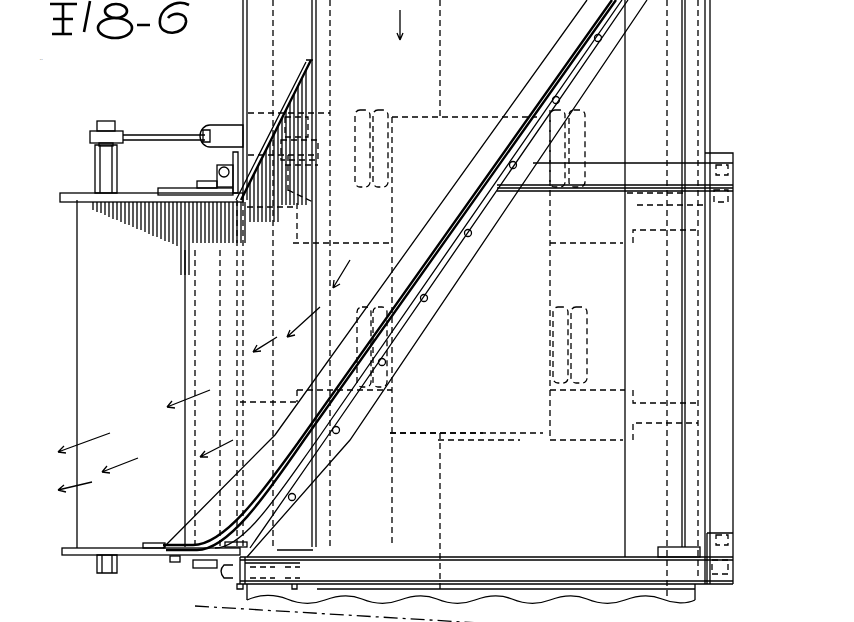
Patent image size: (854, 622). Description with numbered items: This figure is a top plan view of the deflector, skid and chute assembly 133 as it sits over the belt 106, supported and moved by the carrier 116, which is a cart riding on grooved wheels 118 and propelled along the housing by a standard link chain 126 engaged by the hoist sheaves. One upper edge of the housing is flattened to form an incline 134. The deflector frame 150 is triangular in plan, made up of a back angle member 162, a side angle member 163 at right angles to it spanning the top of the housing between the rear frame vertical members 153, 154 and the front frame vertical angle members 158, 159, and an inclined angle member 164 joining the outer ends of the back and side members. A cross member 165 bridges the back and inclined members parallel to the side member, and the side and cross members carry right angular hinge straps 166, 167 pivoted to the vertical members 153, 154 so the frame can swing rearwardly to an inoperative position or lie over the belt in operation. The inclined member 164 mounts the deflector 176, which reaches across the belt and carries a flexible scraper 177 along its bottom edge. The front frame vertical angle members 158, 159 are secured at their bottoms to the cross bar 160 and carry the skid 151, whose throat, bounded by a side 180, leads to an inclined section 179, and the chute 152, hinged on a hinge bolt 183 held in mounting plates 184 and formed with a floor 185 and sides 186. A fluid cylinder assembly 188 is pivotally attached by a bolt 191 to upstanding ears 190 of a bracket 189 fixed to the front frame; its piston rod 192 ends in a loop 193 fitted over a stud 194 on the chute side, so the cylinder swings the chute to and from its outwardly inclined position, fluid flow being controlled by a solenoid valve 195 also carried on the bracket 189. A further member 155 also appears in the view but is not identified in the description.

The belt 106 is at (623, 80).
The carrier 116 is at (483, 433).
The grooved wheels 118 is at (590, 305).
The standard link chain 126 is at (447, 523).
The deflector, skid and chute assembly 133 is at (522, 74).
The incline 134 is at (245, 62).
The deflector frame 150 is at (710, 135).
The skid 151 is at (208, 290).
The chute 152 is at (78, 388).
The vertical member 153 is at (735, 553).
The vertical member 154 is at (735, 210).
The frame channel 155 is at (733, 480).
The vertical angle member 158 is at (228, 587).
The vertical angle member 159 is at (220, 177).
The cross bar 160 is at (230, 128).
The back angle member 162 is at (697, 75).
The side angle member 163 is at (552, 557).
The inclined angle member 164 is at (443, 287).
The cross member 165 is at (557, 193).
The hinge strap 166 is at (665, 547).
The hinge strap 167 is at (670, 198).
The deflector 176 is at (243, 518).
The flexible scraper 177 is at (267, 515).
The inclined section 179 is at (282, 100).
The side 180 is at (153, 540).
The hinge bolt 183 is at (210, 568).
The mounting plates 184 is at (180, 187).
The floor 185 is at (87, 325).
The sides 186 is at (83, 200).
The fluid cylinder assembly 188 is at (203, 125).
The bracket 189 is at (297, 123).
The upstanding ears 190 is at (302, 130).
The bolt 191 is at (320, 83).
The piston rod 192 is at (150, 133).
The loop 193 is at (90, 133).
The stud 194 is at (95, 163).
The solenoid valve 195 is at (310, 195).